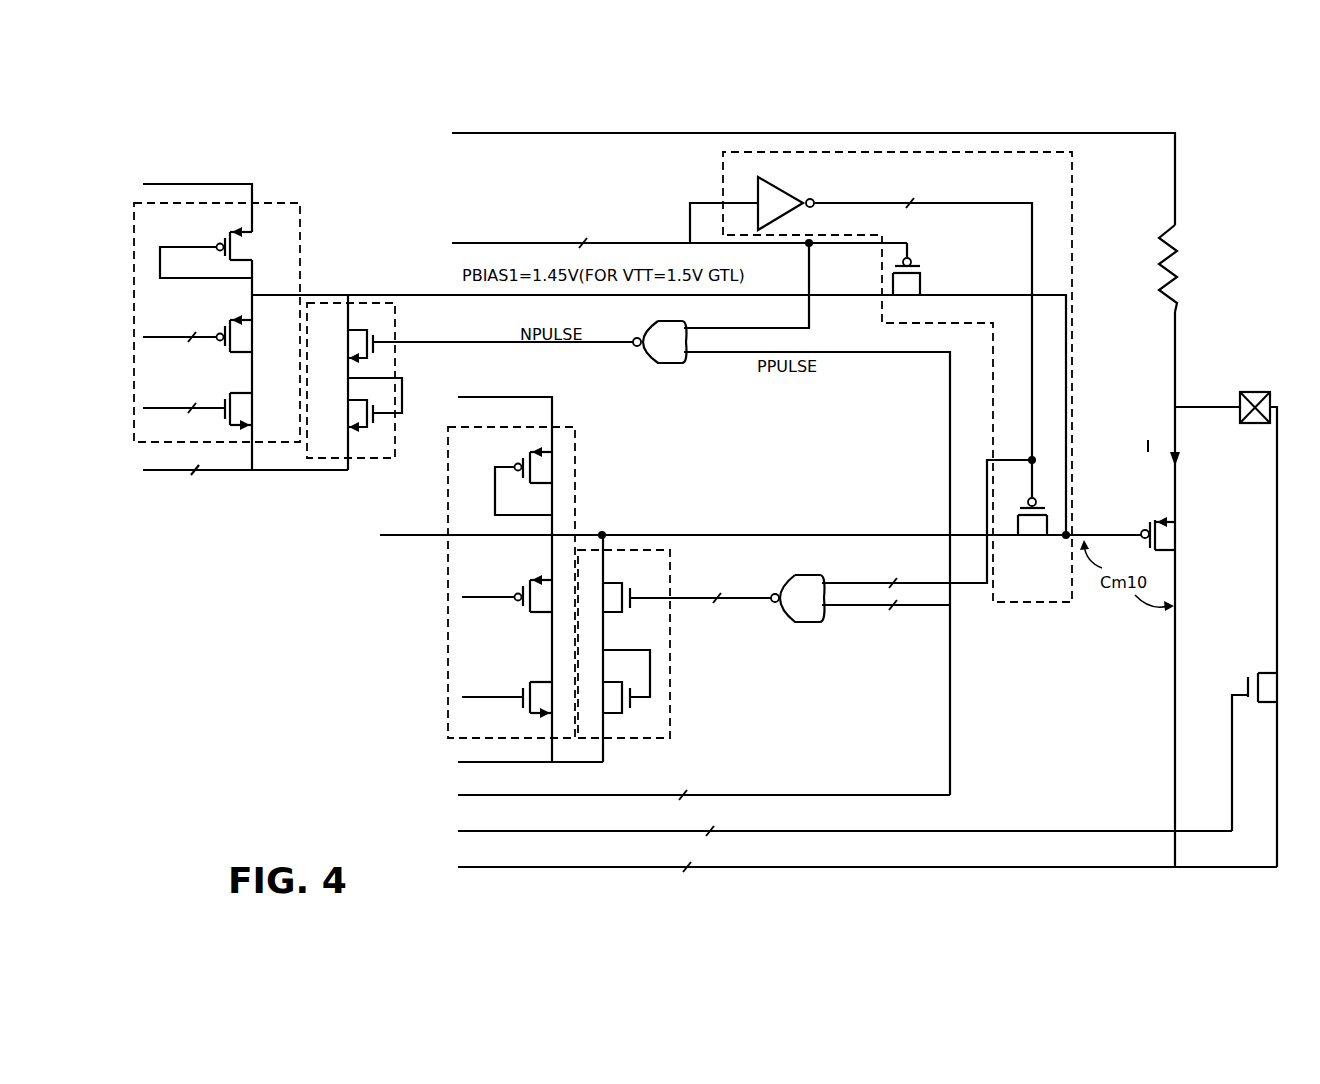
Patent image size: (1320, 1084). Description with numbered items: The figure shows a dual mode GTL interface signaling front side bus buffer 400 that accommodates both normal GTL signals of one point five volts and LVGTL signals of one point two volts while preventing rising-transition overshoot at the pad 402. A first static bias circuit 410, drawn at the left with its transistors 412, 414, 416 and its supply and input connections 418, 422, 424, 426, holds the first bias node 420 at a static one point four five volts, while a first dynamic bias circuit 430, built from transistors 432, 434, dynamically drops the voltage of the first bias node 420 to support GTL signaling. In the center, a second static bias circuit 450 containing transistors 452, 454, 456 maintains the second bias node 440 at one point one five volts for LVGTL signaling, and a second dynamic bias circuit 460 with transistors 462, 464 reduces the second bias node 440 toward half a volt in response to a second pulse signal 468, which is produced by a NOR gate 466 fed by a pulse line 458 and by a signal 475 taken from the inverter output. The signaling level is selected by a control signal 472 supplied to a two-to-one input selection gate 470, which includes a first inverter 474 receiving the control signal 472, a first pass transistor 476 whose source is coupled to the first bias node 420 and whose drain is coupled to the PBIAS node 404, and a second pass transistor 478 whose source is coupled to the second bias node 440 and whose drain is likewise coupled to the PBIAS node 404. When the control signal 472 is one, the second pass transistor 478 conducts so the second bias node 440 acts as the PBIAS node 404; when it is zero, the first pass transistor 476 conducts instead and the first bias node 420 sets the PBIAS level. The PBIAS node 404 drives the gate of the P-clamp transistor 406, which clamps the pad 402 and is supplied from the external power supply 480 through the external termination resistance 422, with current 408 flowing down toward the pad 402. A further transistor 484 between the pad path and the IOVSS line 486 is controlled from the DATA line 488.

The dual mode GTL interface signaling FSB buffer 400 is at (1233, 131).
The pad 402 is at (1250, 392).
The PBIAS node 404 is at (1072, 505).
The M10 P-clamp transistor 406 is at (1211, 529).
The current path 408 is at (1183, 589).
The first static bias circuit 410 is at (300, 210).
The transistor M12 412 is at (286, 252).
The transistor M13 414 is at (286, 340).
The transistor M14 416 is at (286, 405).
The VDD supply 418 is at (253, 200).
The first bias (PBIAS1) node 420 is at (358, 293).
The VBIAS input / external termination resistor 422 is at (1245, 258).
The EN input 424 is at (184, 408).
The VSS supply 426 is at (245, 485).
The first dynamic bias circuit 430 is at (328, 305).
The transistor M16 432 is at (345, 354).
The transistor M17 434 is at (361, 415).
The second bias (PBIAS2) node 440 is at (602, 530).
The second static bias circuit 450 is at (575, 436).
The M2 transistor 452 is at (575, 470).
The transistor M3 454 is at (533, 616).
The transistor M4 456 is at (537, 671).
The PPULSE signal line 458 is at (703, 713).
The second dynamic bias circuit 460 is at (672, 683).
The transistor M6 462 is at (610, 614).
The transistor M7 464 is at (612, 715).
The NOR gate NOR2 466 is at (802, 628).
The second pulse signal (NPULSE2) 468 is at (700, 604).
The input selection gate 470 is at (1072, 190).
The control (LVGTL) signal 472 is at (520, 222).
The first inverter 474 is at (772, 172).
The inverted LVOTL signal line 475 is at (925, 380).
The first pass (M8) transistor 476 is at (922, 287).
The second pass (M9) transistor 478 is at (1032, 537).
The external power supply EXT VTT 480 is at (535, 113).
The transistor M11 484 is at (1251, 752).
The IOVSS line 486 is at (867, 874).
The DATA line 488 is at (844, 837).